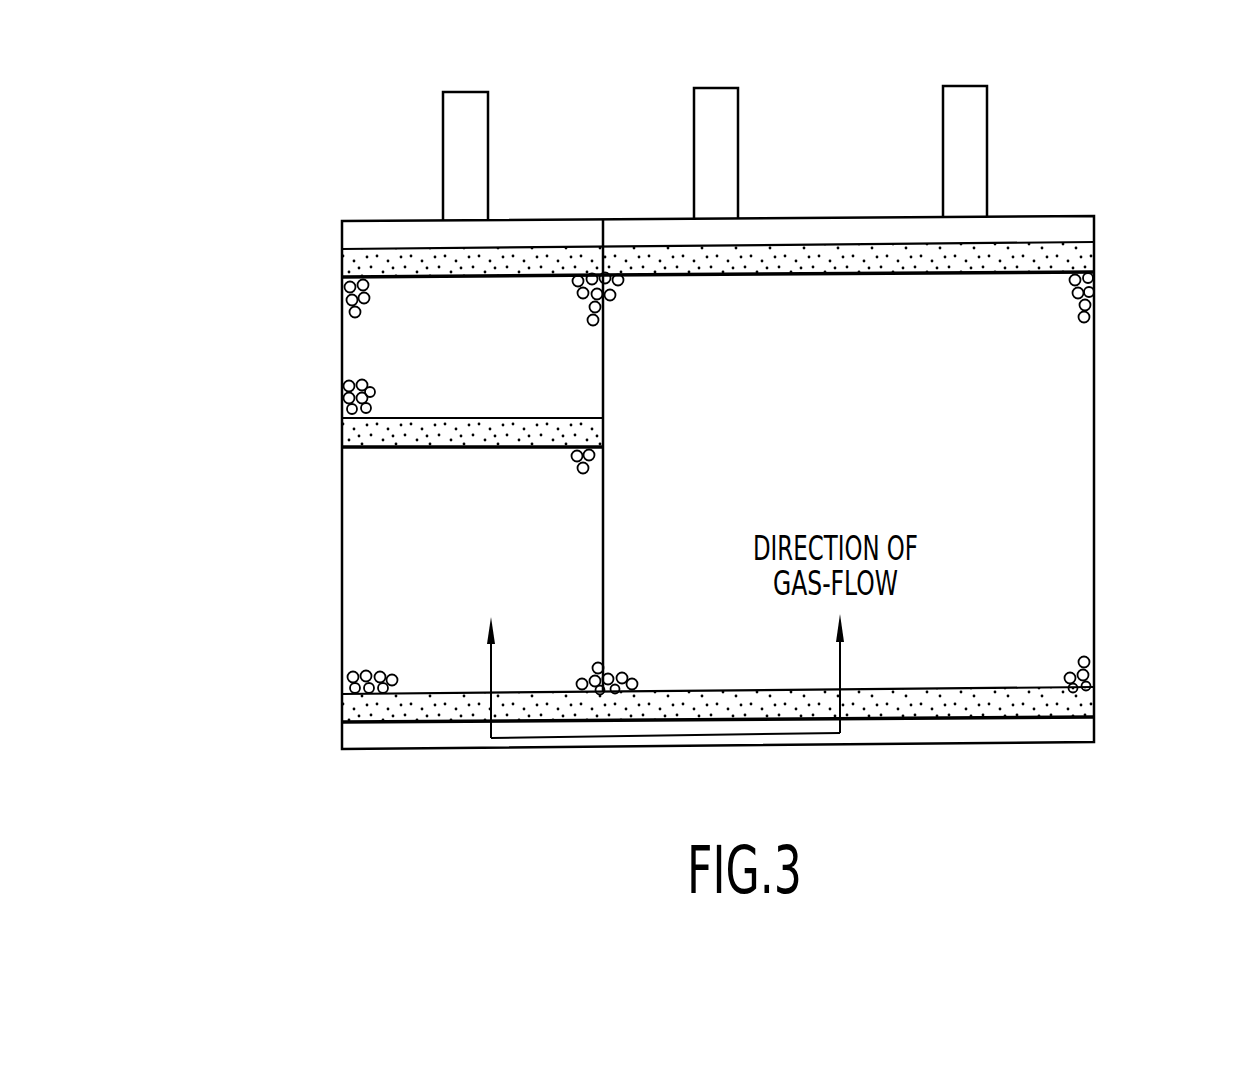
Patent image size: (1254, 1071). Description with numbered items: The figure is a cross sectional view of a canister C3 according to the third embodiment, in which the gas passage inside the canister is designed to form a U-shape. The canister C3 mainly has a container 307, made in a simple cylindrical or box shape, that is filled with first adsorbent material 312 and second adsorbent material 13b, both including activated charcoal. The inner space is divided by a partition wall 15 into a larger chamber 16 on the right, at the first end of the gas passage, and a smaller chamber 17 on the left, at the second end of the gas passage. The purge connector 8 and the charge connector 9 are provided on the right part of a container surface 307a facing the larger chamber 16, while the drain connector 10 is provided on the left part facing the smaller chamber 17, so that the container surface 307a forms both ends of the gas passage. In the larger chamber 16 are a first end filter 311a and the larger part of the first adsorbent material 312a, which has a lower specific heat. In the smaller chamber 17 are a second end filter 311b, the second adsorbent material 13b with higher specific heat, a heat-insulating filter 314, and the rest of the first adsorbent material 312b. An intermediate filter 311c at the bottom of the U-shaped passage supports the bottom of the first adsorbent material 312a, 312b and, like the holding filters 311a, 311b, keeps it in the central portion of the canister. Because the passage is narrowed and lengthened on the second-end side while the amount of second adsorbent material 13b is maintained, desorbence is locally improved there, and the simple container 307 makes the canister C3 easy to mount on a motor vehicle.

The purge connector 8 is at (694, 152).
The charge connector 9 is at (943, 98).
The drain connector 10 is at (443, 158).
The second adsorbent material 13b is at (345, 385).
The partition wall 15 is at (604, 487).
The larger chamber 16 is at (1077, 623).
The smaller chamber 17 is at (370, 578).
The container 307 is at (1095, 493).
The container surface 307a is at (845, 217).
The first end filter 311a is at (1043, 257).
The second end filter 311b is at (507, 262).
The intermediate filter 311c is at (1060, 710).
The first adsorbent material 312 is at (642, 803).
The larger part of the first adsorbent material 312a is at (620, 687).
The rest of the first adsorbent material 312b is at (377, 690).
The heat-insulating filter 314 is at (365, 438).
The canister C3 is at (288, 295).